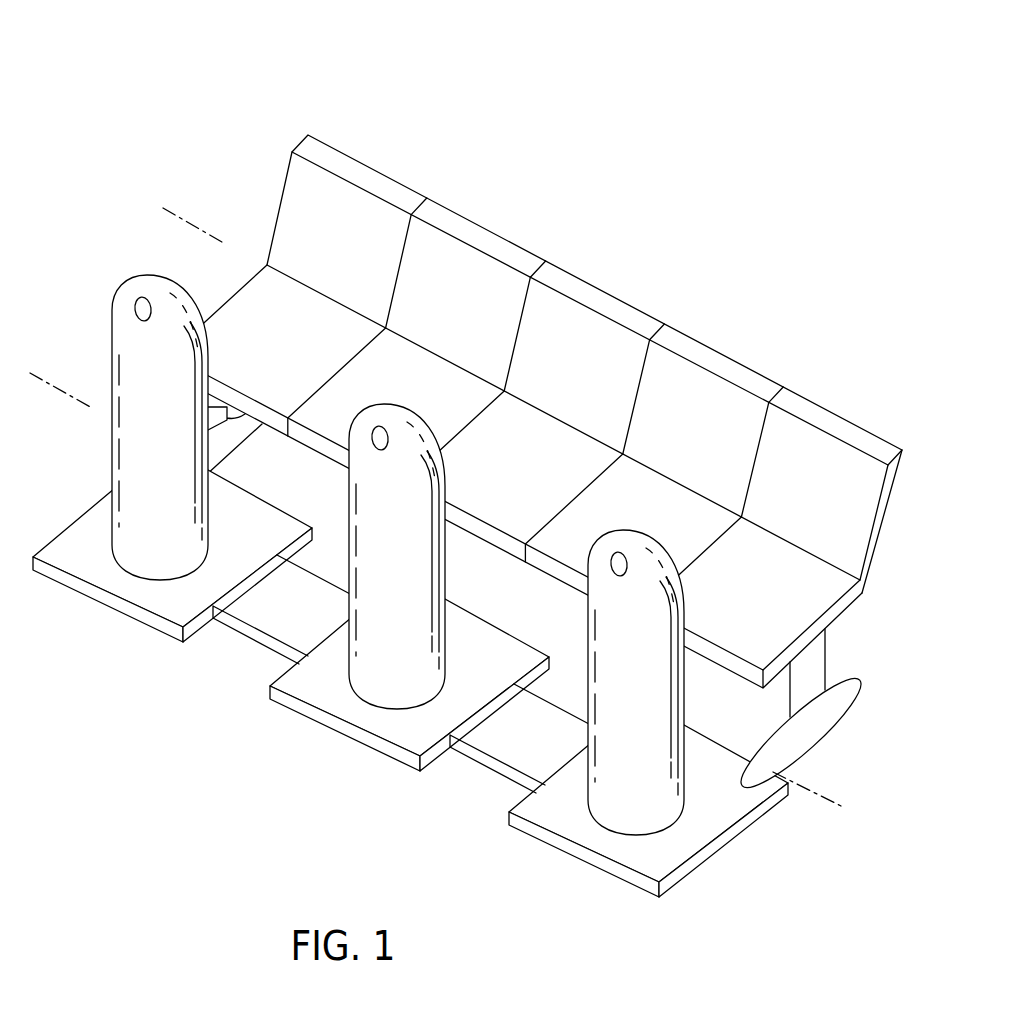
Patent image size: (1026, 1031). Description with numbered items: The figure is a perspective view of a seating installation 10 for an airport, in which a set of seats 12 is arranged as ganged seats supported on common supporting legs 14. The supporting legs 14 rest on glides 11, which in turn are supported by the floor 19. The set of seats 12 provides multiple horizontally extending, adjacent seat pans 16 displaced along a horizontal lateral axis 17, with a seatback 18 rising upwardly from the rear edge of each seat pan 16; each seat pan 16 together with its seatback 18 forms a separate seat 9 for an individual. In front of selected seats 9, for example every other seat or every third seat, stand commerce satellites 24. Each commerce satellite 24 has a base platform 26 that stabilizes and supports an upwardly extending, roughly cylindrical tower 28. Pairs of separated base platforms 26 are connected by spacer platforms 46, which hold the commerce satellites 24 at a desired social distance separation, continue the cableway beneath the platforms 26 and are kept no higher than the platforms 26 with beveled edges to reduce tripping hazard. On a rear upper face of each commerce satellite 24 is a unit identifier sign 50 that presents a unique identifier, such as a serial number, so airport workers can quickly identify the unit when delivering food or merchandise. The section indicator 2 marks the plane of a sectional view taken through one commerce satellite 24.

The seating installation 10 is at (224, 58).
The seat 9 is at (652, 280).
The seatback 18 is at (428, 245).
The set of seats 12 is at (877, 443).
The seat pan 16 is at (240, 322).
The supporting leg 14 is at (820, 673).
The glide 11 is at (829, 721).
The commerce satellite 24 is at (88, 610).
The base platform 26 is at (655, 855).
The spacer platform 46 is at (260, 613).
The tower 28 is at (610, 633).
The unit identifier sign 50 is at (151, 323).
The floor 19 is at (772, 898).
The section line 2- 2 is at (30, 373).
The lateral axis 17 is at (196, 222).